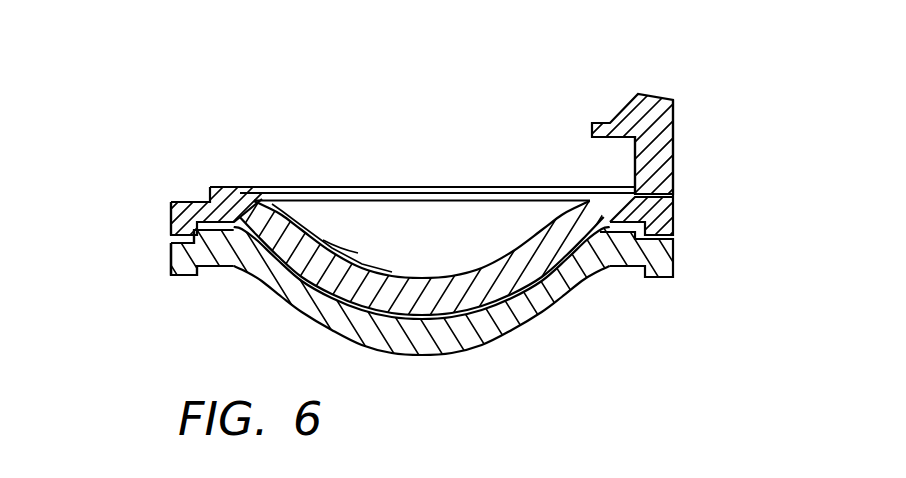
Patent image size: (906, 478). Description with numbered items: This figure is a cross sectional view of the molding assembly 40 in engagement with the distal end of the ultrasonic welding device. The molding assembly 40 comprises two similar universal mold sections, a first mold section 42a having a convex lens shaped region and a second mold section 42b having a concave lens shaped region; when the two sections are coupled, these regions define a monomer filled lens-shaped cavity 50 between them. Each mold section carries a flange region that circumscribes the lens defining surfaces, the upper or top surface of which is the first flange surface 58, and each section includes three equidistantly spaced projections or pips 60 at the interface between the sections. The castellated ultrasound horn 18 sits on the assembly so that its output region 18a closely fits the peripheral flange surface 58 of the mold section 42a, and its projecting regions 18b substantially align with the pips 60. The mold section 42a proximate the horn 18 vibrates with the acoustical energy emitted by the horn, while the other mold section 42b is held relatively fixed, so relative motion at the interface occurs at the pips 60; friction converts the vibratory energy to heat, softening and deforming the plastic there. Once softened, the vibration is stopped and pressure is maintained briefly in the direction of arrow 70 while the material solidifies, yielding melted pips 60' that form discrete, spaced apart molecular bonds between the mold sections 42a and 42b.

The castellated ultrasound horn 18 is at (688, 80).
The output region of the horn 18a is at (677, 130).
The projecting regions of the horn 18b is at (636, 154).
The molding assembly 40 is at (140, 288).
The first mold section 42a is at (370, 172).
The second mold section 42b is at (578, 293).
The lens-shaped cavity 50 is at (485, 307).
The first flange surface 58 is at (193, 200).
The projections or pips 60 is at (670, 231).
The melted pips 60' is at (121, 201).
The arrow indicating pressure direction 70 is at (726, 125).